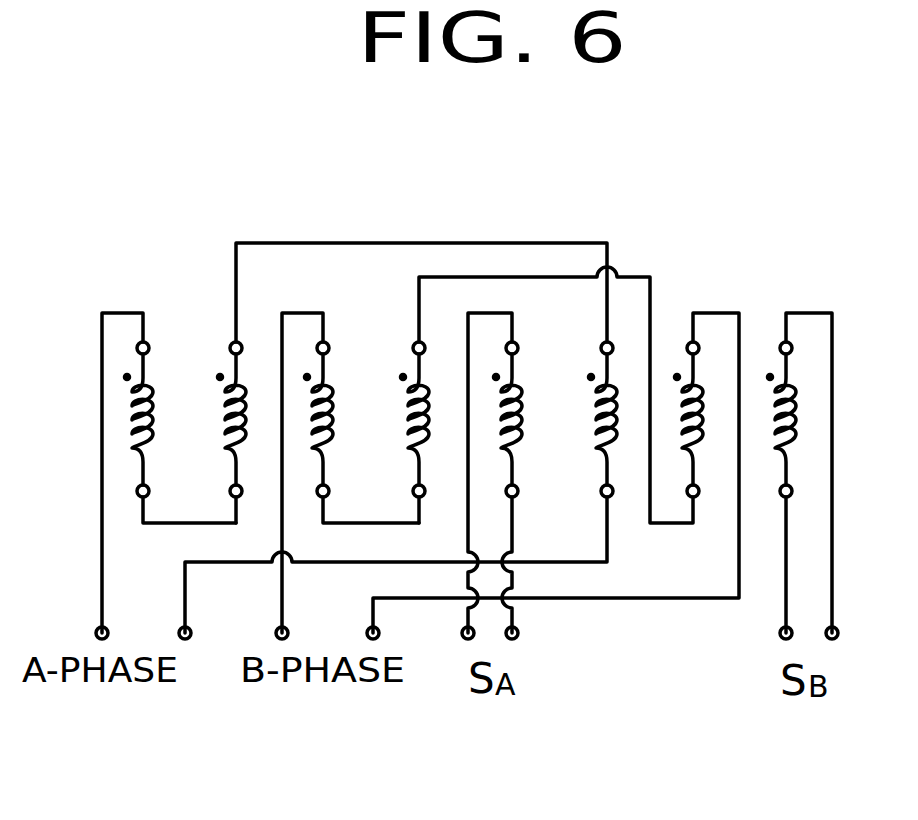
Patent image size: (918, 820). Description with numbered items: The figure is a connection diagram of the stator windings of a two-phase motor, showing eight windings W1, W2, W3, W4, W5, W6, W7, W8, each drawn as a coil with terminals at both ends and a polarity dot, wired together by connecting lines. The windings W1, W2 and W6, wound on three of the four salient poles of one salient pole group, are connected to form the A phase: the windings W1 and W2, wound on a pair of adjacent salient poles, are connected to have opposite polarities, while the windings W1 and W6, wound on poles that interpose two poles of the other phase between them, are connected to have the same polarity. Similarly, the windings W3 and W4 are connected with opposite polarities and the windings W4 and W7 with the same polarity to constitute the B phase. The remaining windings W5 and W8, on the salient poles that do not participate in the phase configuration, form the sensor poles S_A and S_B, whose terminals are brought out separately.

The winding W1 is at (132, 402).
The winding W2 is at (222, 412).
The winding W3 is at (336, 408).
The winding W4 is at (405, 413).
The winding W5 is at (522, 408).
The winding W6 is at (593, 407).
The winding W7 is at (683, 410).
The winding W8 is at (775, 410).